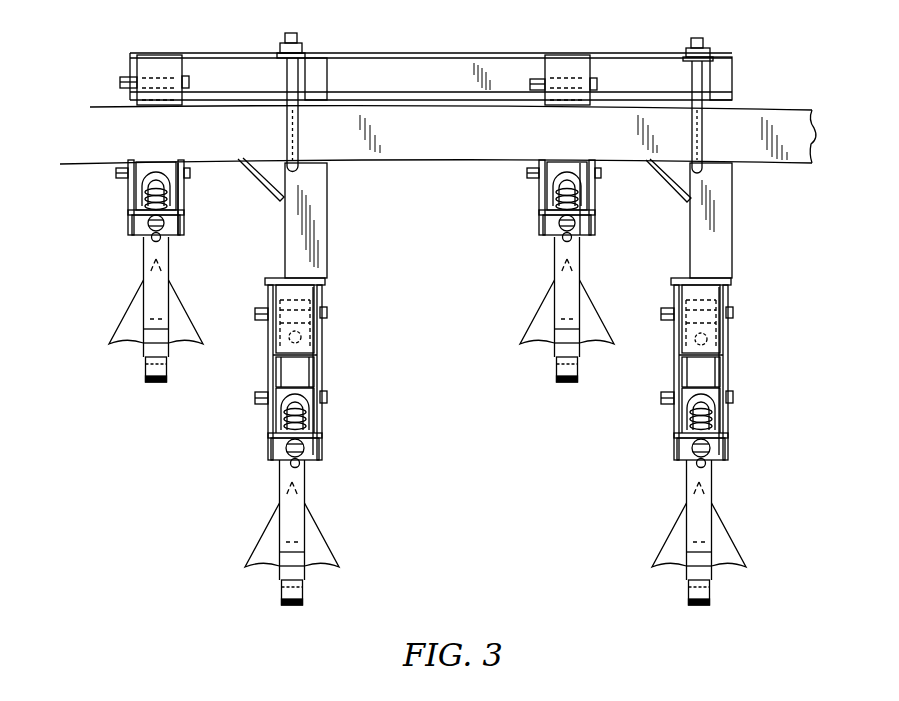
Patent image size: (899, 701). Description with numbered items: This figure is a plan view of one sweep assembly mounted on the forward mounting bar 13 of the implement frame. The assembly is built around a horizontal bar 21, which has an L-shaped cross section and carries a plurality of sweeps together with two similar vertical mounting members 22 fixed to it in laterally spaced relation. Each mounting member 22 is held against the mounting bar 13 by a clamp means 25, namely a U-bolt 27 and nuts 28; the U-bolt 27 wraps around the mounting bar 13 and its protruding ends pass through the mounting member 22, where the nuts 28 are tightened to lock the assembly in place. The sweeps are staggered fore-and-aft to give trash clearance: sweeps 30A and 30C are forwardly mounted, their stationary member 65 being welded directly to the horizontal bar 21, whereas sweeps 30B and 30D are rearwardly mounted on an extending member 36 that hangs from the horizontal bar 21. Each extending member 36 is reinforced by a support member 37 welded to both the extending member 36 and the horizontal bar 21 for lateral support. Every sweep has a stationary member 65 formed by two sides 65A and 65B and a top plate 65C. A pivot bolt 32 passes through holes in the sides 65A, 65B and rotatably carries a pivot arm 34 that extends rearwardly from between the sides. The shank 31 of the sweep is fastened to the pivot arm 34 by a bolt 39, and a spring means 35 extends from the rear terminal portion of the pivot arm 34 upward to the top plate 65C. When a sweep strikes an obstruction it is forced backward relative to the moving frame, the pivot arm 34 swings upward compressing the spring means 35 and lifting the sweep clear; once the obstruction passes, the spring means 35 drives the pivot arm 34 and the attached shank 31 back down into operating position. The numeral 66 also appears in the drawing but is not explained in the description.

The forward mounting bar 13 is at (772, 90).
The horizontal bar 21 is at (258, 52).
The mounting member 22 is at (333, 55).
The clamp means 25 is at (290, 34).
The U-bolt 27 is at (303, 168).
The nut 28 is at (304, 66).
The sweep 30A is at (118, 320).
The sweep 30B is at (258, 542).
The sweep 30C is at (535, 323).
The sweep 30D is at (660, 551).
The shank 31 is at (305, 532).
The pivot bolt 32 is at (122, 84).
The pivot arm 34 is at (295, 378).
The spring means 35 is at (133, 198).
The extending member 36 is at (327, 205).
The support member 37 is at (265, 182).
The bolt 39 is at (302, 337).
The stationary member 65 is at (224, 32).
The stationary member side 65A is at (268, 345).
The stationary member side 65B is at (322, 368).
The top plate 65C is at (283, 462).
The mounting block 66 is at (168, 62).